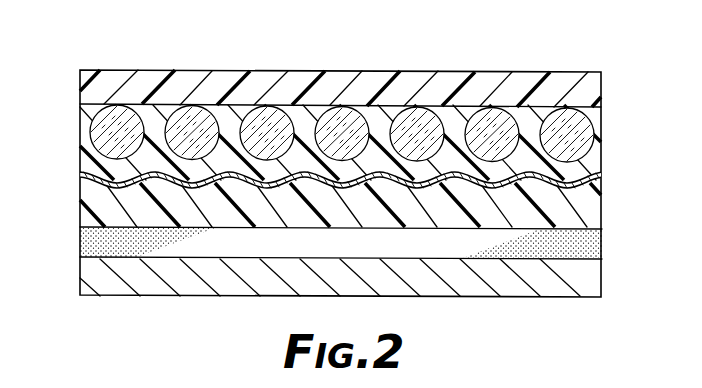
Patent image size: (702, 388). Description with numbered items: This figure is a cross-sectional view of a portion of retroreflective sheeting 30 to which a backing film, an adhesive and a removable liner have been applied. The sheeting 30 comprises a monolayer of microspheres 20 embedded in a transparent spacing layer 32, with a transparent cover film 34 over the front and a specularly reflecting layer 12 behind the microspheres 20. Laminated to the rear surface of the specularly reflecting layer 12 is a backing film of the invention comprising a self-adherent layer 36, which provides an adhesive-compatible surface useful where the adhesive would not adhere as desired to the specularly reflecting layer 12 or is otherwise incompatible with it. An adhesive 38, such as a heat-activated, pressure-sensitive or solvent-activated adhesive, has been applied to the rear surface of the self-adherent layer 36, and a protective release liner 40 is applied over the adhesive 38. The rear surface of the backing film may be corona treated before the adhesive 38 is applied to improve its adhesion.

The retroreflective sheeting 30 is at (87, 58).
The transparent cover film 34 is at (462, 78).
The transparent spacing layer 32 is at (602, 129).
The microspheres 20 is at (407, 119).
The specularly reflecting layer 12 is at (342, 180).
The self-adherent layer 36 is at (592, 210).
The adhesive 38 is at (590, 240).
The protective release liner 40 is at (575, 284).